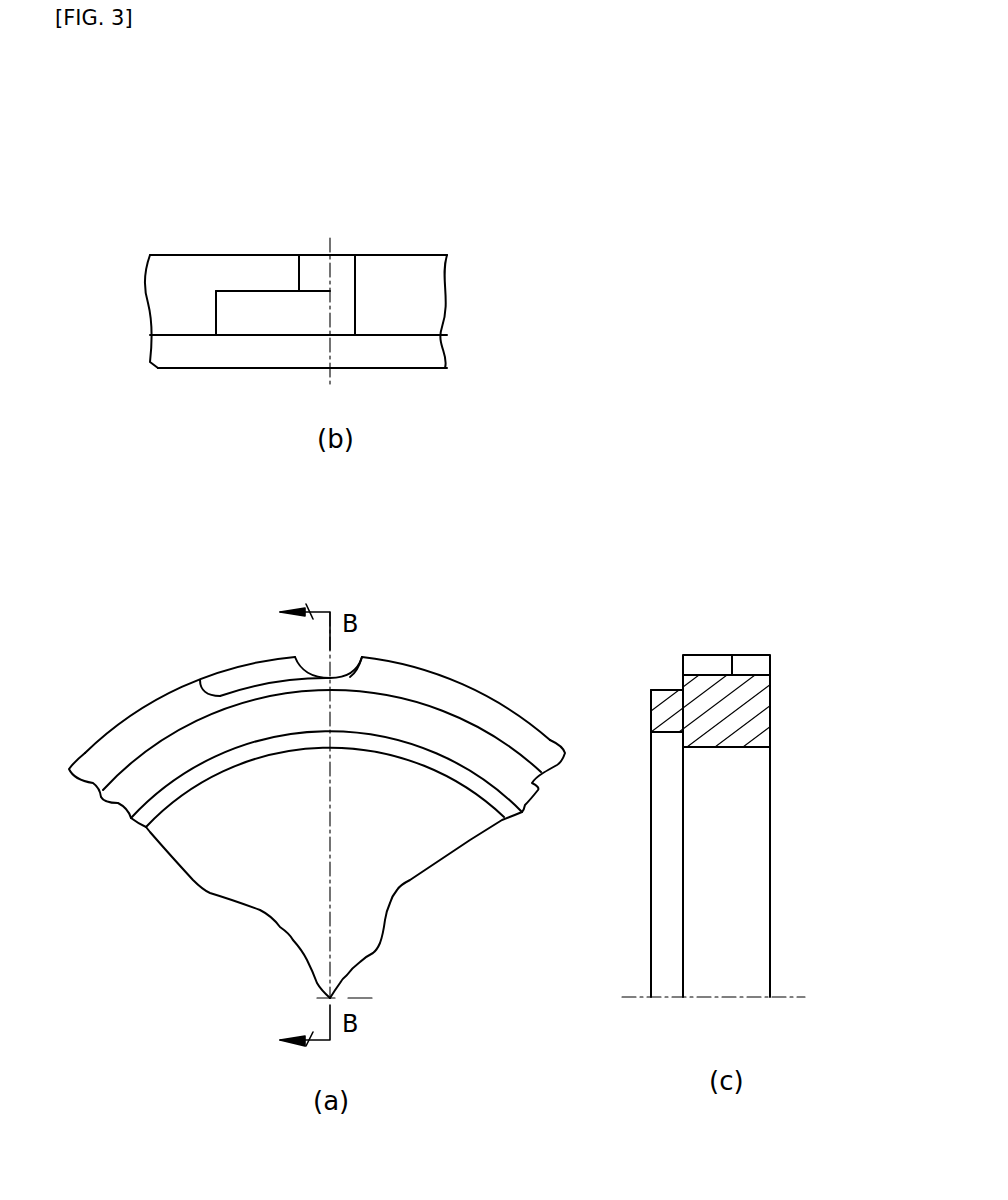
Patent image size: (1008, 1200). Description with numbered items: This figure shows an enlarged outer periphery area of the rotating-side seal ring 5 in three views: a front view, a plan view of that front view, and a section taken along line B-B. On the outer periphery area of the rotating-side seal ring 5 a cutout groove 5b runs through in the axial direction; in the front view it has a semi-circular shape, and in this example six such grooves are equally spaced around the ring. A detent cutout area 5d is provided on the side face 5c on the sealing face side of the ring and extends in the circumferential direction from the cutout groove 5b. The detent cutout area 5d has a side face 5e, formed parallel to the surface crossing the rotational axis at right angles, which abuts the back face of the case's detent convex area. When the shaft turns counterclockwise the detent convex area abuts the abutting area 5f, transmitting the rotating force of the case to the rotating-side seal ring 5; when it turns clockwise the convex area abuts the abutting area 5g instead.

The rotating-side seal ring 5 is at (430, 254).
The cutout groove 5b is at (337, 272).
The side face 5c is at (182, 340).
The detent cutout area 5d is at (287, 320).
The side face of the detent cutout area 5e is at (257, 297).
The abutting area 5f is at (220, 322).
The abutting area 5g is at (357, 312).